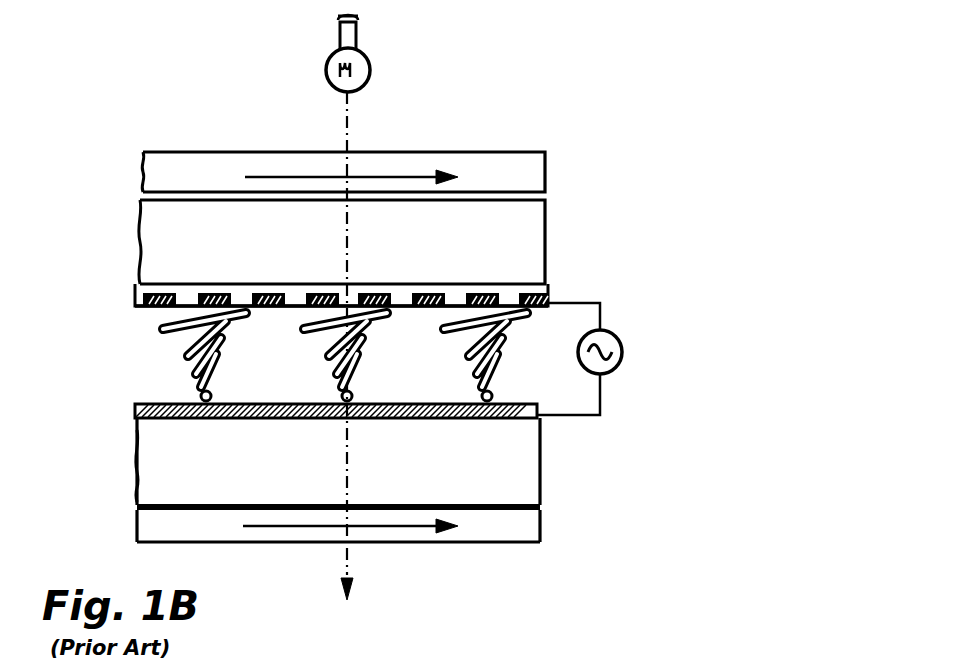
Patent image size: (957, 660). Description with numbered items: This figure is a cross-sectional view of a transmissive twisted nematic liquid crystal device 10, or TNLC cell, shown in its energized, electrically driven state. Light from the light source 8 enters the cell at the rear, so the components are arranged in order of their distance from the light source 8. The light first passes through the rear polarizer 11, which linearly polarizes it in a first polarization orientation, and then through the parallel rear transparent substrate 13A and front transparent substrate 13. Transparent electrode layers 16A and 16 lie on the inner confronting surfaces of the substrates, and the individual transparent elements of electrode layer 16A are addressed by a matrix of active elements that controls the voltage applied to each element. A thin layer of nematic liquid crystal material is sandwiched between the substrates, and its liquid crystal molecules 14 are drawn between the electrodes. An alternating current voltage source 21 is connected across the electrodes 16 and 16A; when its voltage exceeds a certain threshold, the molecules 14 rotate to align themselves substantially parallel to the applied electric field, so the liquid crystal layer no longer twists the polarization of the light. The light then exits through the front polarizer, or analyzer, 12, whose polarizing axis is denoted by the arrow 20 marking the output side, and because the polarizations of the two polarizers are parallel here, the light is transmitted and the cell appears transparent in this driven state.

The light source 8 is at (372, 70).
The twisted nematic liquid crystal device 10 is at (495, 129).
The rear polarizer 11 is at (548, 180).
The front polarizer 12 is at (540, 535).
The front transparent substrate 13 is at (542, 480).
The rear transparent substrate 13A is at (548, 248).
The liquid crystal molecules 14 is at (503, 332).
The transparent electrode layer 16 is at (133, 410).
The transparent electrode layer 16A is at (555, 301).
The polarizing axis arrow 20 is at (477, 545).
The alternating current voltage source 21 is at (622, 345).